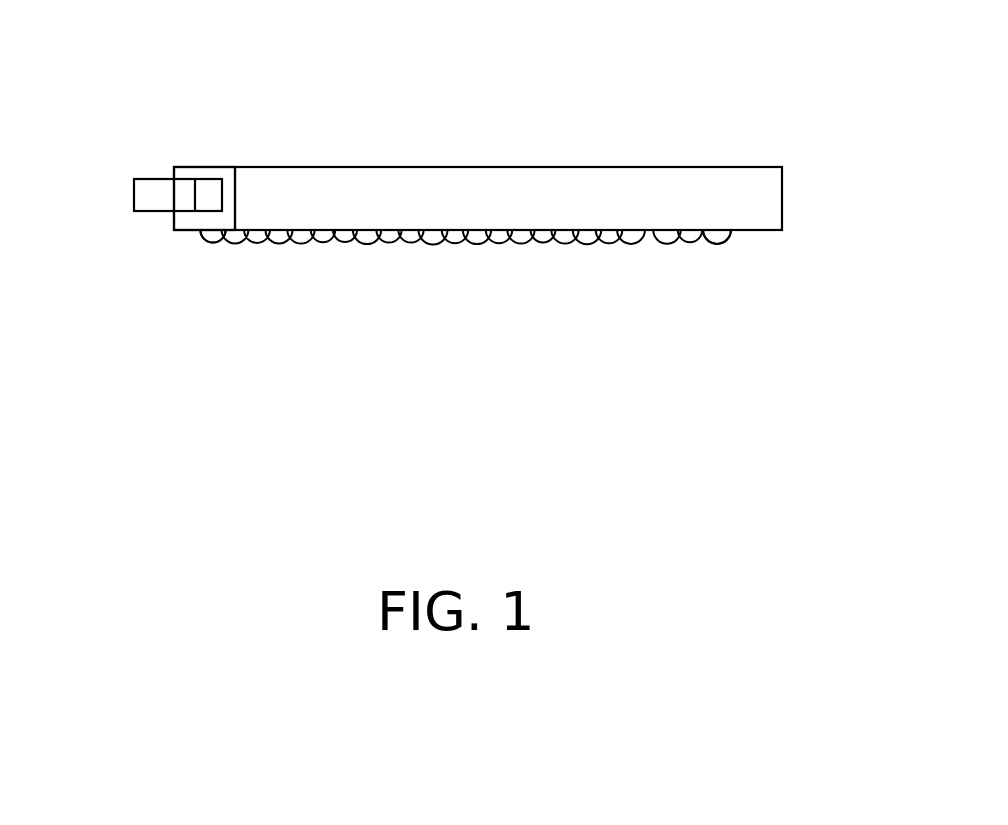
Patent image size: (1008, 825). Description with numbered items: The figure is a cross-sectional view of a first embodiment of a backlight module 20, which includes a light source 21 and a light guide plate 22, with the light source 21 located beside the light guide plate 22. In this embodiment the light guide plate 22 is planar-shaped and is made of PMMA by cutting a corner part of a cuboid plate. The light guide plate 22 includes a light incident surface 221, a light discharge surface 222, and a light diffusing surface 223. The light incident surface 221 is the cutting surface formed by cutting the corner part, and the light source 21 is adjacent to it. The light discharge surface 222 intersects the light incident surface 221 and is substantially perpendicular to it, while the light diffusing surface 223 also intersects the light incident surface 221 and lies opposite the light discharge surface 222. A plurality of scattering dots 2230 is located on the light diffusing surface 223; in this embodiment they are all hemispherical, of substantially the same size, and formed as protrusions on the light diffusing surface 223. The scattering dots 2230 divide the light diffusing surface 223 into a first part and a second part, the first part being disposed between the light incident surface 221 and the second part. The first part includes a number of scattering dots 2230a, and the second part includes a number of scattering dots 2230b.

The backlight module 20 is at (455, 61).
The light source 21 is at (153, 195).
The light guide plate 22 is at (772, 207).
The light incident surface 221 is at (202, 172).
The light discharge surface 222 is at (627, 165).
The light diffusing surface 223 is at (753, 233).
The scattering dots 2230 is at (755, 320).
The scattering dots of the first part 2230a is at (215, 239).
The scattering dots of the second part 2230b is at (717, 239).